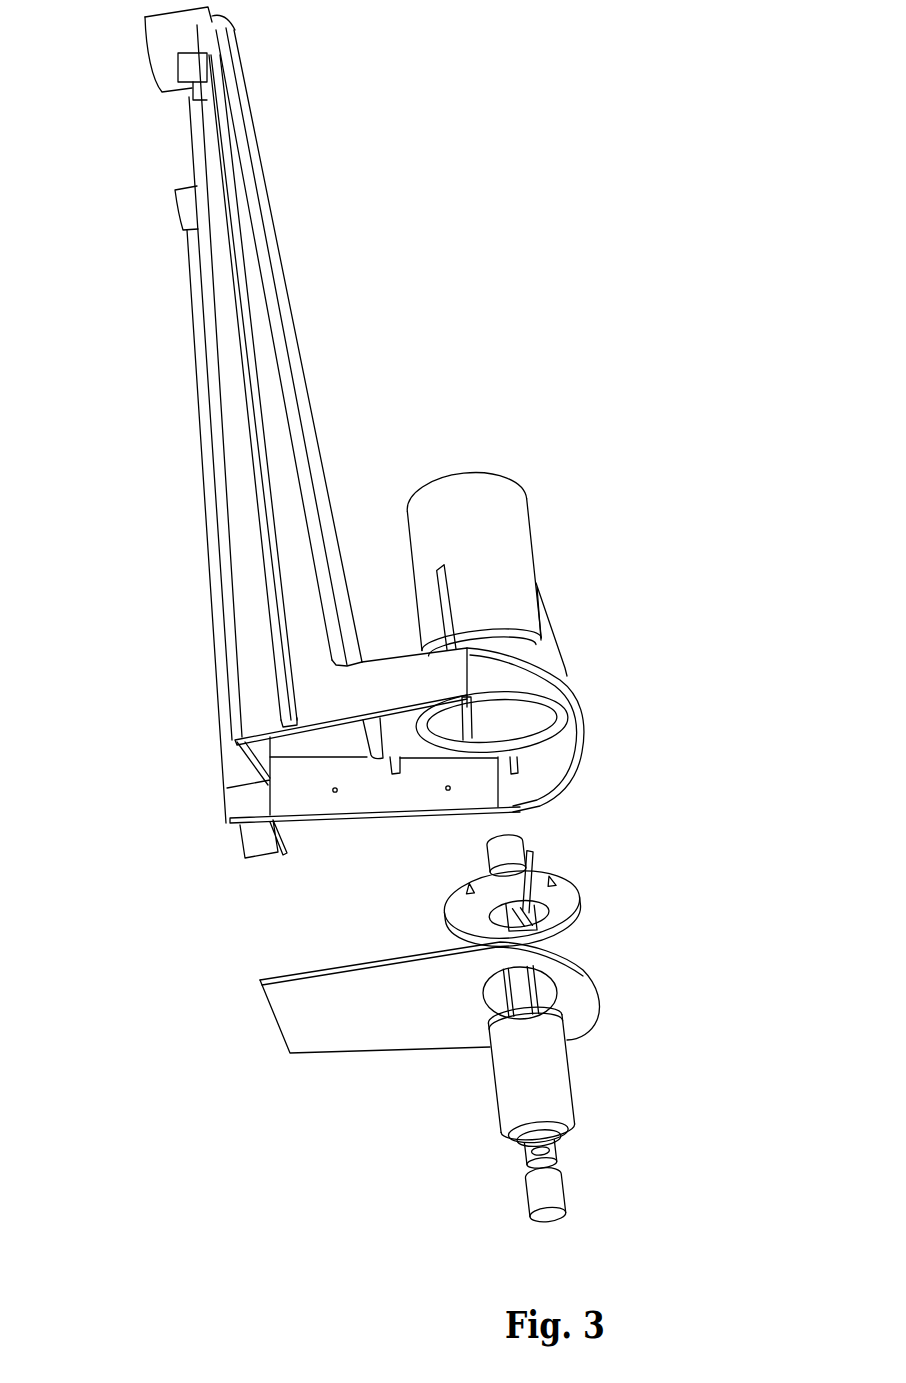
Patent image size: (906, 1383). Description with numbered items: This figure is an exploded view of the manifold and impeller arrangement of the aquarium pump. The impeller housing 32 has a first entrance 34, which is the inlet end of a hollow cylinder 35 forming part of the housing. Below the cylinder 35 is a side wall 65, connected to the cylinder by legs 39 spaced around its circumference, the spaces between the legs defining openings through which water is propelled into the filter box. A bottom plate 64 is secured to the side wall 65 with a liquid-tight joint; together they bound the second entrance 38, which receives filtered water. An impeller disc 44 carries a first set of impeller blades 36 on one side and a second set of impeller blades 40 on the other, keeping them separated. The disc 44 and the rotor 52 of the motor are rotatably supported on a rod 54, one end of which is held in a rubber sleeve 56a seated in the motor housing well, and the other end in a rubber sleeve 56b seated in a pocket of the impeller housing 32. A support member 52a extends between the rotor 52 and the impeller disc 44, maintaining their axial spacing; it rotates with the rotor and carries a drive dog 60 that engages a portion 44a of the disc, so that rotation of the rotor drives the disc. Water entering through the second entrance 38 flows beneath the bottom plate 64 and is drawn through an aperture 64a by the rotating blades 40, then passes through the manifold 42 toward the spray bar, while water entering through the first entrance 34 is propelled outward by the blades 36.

The impeller housing 32 is at (640, 562).
The first entrance 34 is at (504, 548).
The hollow cylinder 35 is at (526, 570).
The first set of impeller blades 36 is at (616, 826).
The second entrance 38 is at (197, 786).
The legs 39 is at (550, 630).
The second set of impeller blades 40 is at (642, 833).
The manifold 42 is at (267, 168).
The impeller disc 44 is at (558, 921).
The portion of impeller disc 44a is at (594, 884).
The rotor 52 is at (572, 1072).
The support member 52a is at (445, 1057).
The rod 54 is at (497, 1170).
The rubber sleeve 56a is at (594, 1189).
The rubber sleeve 56b is at (464, 853).
The drive dog 60 is at (582, 917).
The bottom plate 64 is at (262, 1013).
The aperture 64a is at (550, 990).
The side wall 65 is at (583, 701).